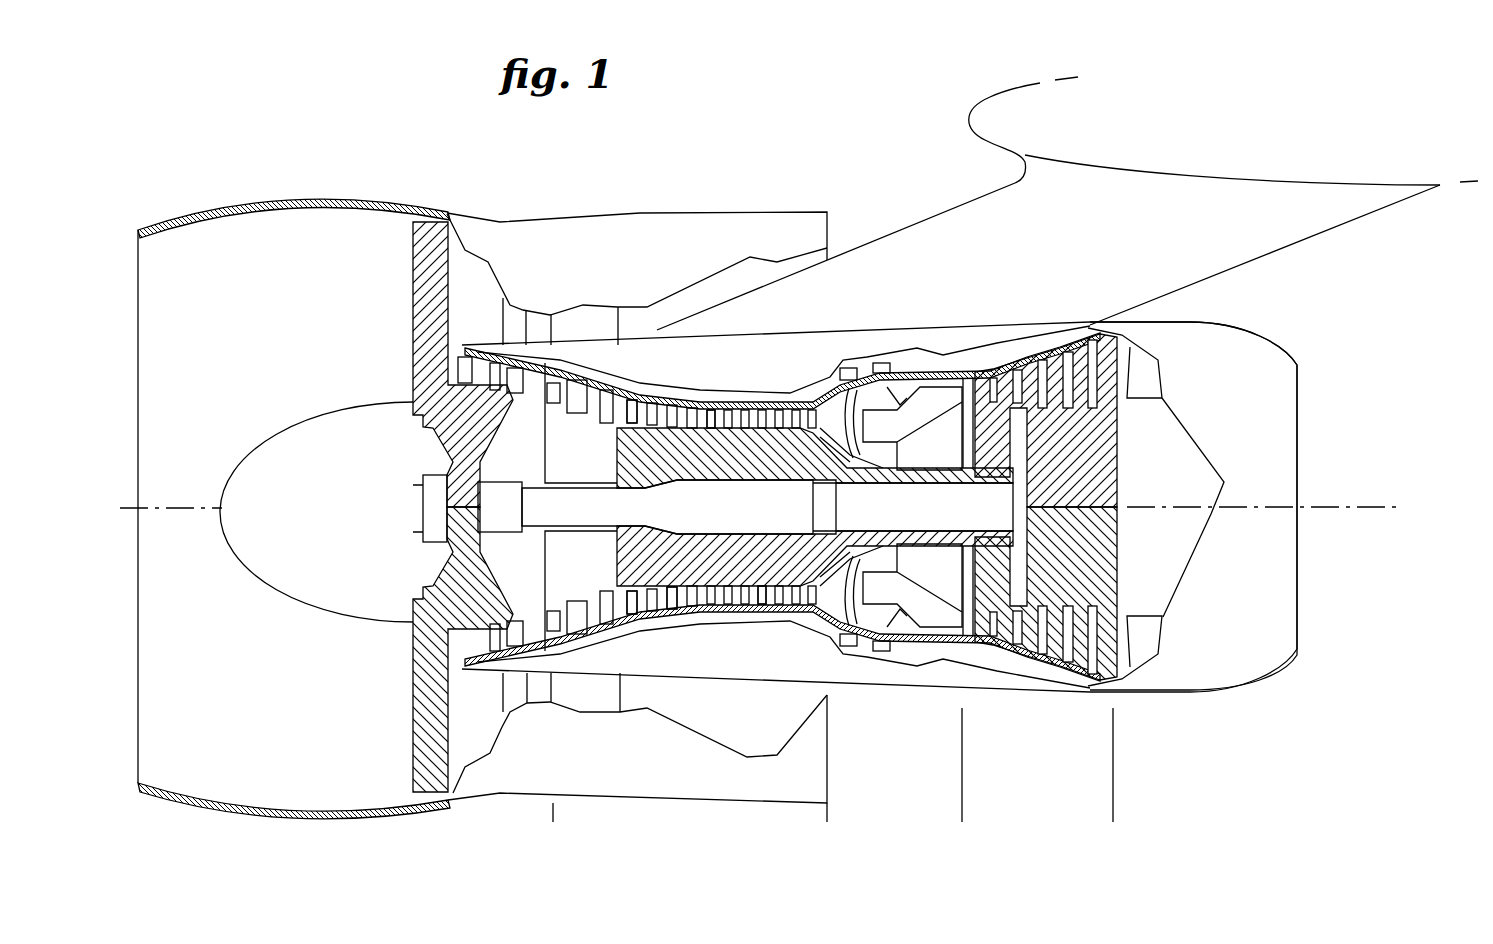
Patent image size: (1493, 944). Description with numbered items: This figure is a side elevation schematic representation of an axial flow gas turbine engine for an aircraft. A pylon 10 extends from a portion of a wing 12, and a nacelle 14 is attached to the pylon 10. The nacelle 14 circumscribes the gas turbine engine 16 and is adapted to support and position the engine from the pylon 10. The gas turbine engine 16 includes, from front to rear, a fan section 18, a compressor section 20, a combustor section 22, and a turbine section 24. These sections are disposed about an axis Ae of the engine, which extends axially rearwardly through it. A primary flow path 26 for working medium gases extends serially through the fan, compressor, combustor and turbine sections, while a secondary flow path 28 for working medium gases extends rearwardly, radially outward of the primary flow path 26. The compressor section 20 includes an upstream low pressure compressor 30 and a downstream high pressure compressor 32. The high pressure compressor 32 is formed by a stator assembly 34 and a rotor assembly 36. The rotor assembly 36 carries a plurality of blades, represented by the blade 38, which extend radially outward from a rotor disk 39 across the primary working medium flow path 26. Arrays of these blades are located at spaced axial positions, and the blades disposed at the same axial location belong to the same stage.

The pylon 10 is at (1272, 338).
The wing 12 is at (997, 95).
The nacelle 14 is at (1265, 228).
The gas turbine engine 16 is at (713, 213).
The fan section 18 is at (553, 822).
The compressor section 20 is at (553, 822).
The combustor section 22 is at (962, 822).
The turbine section 24 is at (962, 822).
The primary flow path 26 is at (400, 367).
The secondary flow path 28 is at (400, 272).
The low pressure compressor 30 is at (563, 390).
The high pressure compressor 32 is at (710, 410).
The stator assembly 34 is at (630, 617).
The rotor assembly 36 is at (677, 620).
The blade 38 is at (635, 410).
The rotor disk 39 is at (765, 570).
The axis of the engine Ae is at (130, 507).